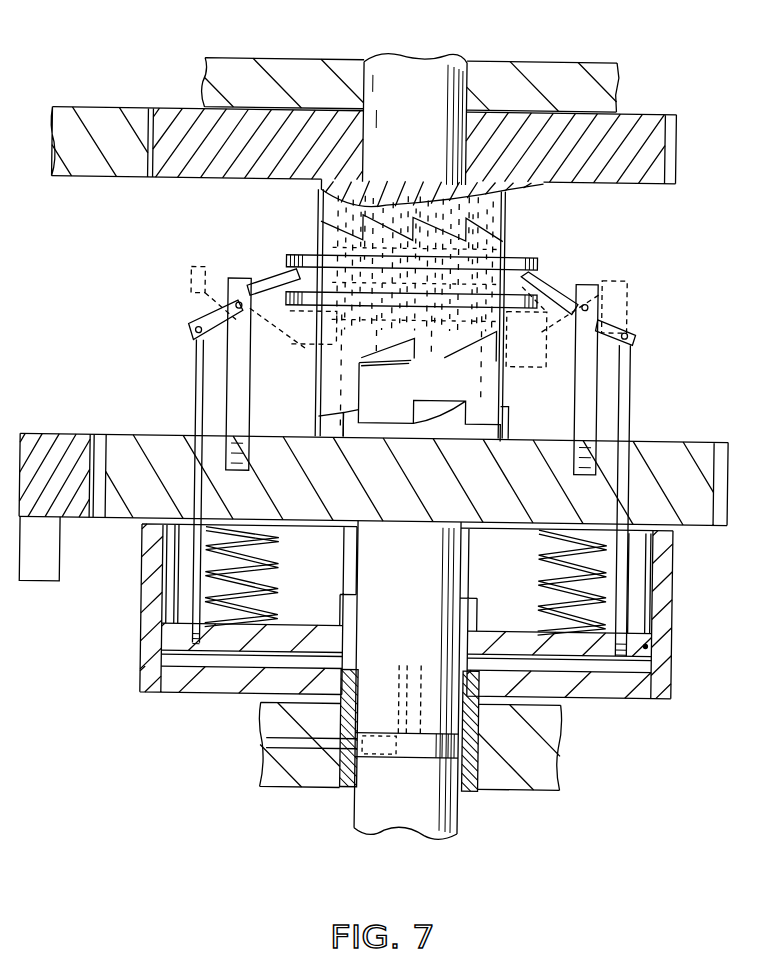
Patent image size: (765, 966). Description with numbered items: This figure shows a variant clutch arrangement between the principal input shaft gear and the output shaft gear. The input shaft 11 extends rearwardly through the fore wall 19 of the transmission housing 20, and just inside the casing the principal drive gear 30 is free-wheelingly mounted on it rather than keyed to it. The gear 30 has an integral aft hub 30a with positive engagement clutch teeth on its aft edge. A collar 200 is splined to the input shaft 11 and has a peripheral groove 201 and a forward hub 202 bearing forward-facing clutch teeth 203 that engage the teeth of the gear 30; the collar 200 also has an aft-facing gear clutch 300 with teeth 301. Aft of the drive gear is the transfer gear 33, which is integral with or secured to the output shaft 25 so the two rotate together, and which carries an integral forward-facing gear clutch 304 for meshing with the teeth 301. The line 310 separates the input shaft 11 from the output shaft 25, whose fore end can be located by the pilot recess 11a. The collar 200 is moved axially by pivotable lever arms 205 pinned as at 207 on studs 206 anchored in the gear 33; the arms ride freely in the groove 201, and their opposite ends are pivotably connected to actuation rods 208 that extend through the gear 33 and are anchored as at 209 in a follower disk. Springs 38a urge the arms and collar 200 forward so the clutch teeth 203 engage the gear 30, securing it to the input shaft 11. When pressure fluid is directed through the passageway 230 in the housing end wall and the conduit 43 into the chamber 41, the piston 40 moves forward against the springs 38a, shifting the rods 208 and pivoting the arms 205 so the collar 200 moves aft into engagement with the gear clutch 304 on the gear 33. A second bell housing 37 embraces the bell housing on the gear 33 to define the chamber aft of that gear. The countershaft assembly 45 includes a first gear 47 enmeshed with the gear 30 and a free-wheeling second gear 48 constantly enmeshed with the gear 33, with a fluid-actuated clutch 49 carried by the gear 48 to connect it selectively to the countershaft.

The input shaft 11 is at (425, 112).
The pilot recess 11a is at (420, 372).
The fore wall 19 is at (536, 61).
The transmission housing 20 is at (624, 58).
The output shaft 25 is at (421, 592).
The principal drive gear 30 is at (676, 150).
The aft hub 30a is at (316, 198).
The transfer gear 33 is at (712, 448).
The second bell housing 37 is at (663, 573).
The springs 38a is at (270, 593).
The piston 40 is at (594, 646).
The chamber 41 is at (588, 665).
The conduit 43 is at (411, 776).
The countershaft assembly 45 is at (86, 104).
The first gear 47 is at (92, 182).
The second gear 48 is at (52, 438).
The clutch 49 is at (40, 588).
The collar 200 is at (546, 254).
The peripheral groove 201 is at (522, 279).
The forward hub 202 is at (505, 248).
The clutch teeth 203 is at (320, 226).
The lever arms 205 is at (548, 288).
The studs 206 is at (581, 342).
The pin 207 is at (596, 306).
The actuation rods 208 is at (634, 404).
The anchor 209 is at (640, 640).
The passageway 230 is at (292, 742).
The aft facing gear clutch 300 is at (360, 348).
The teeth 301 is at (343, 378).
The forward facing gear clutch 304 is at (504, 425).
The separating line 310 is at (360, 352).